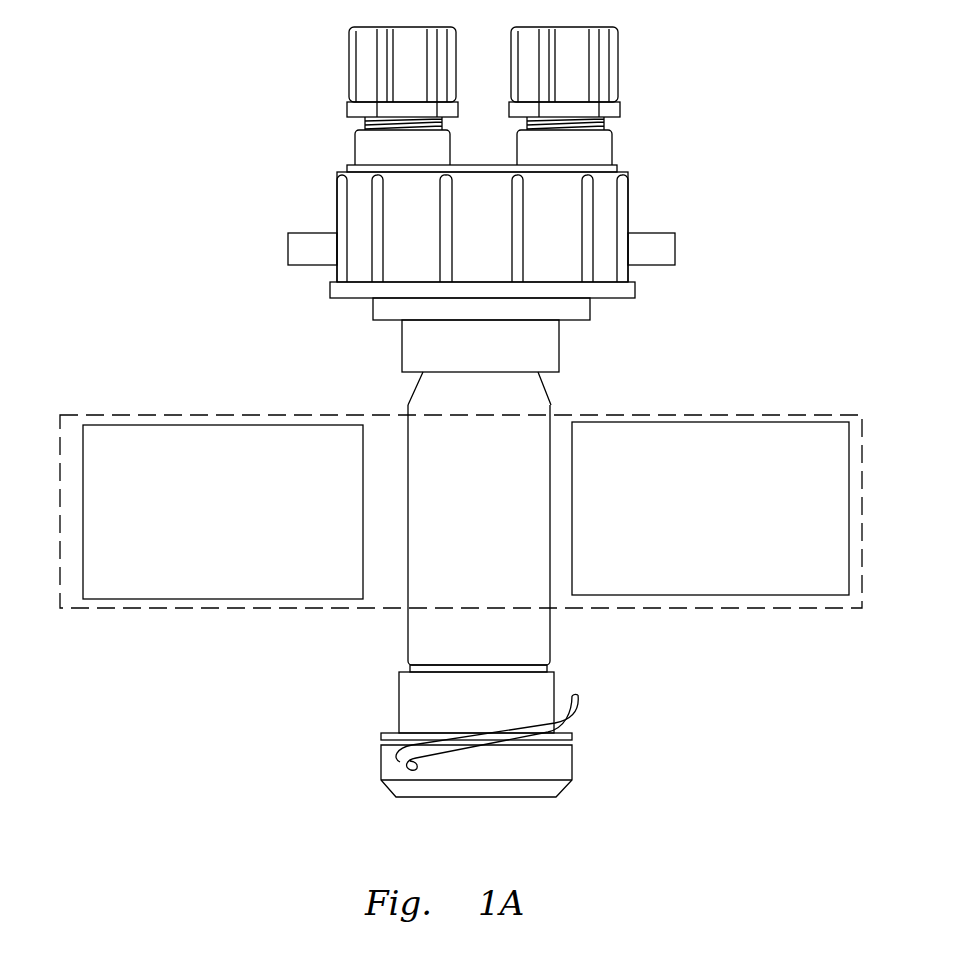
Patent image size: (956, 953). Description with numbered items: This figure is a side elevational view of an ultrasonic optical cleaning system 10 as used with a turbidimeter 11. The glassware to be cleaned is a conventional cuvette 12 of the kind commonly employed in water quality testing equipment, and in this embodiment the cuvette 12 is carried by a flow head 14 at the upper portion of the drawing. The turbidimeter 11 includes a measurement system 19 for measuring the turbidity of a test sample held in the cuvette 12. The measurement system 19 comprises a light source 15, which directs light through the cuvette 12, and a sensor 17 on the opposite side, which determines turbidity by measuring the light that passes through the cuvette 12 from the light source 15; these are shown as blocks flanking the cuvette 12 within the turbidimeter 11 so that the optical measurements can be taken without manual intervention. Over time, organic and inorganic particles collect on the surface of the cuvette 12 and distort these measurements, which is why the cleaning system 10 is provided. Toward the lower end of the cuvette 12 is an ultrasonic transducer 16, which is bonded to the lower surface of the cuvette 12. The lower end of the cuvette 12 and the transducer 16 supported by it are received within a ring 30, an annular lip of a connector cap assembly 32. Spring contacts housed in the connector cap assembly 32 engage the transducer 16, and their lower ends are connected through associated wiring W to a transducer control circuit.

The ultrasonic optical cleaning system 10 is at (300, 115).
The turbidimeter 11 is at (603, 188).
The cuvette 12 is at (539, 401).
The flow head 14 is at (630, 198).
The light source 15 is at (352, 448).
The ultrasonic transducer 16 is at (548, 665).
The sensor 17 is at (838, 448).
The measurement system 19 is at (371, 449).
The ring 30 is at (555, 689).
The connector cap assembly 32 is at (399, 696).
The wiring W is at (578, 718).